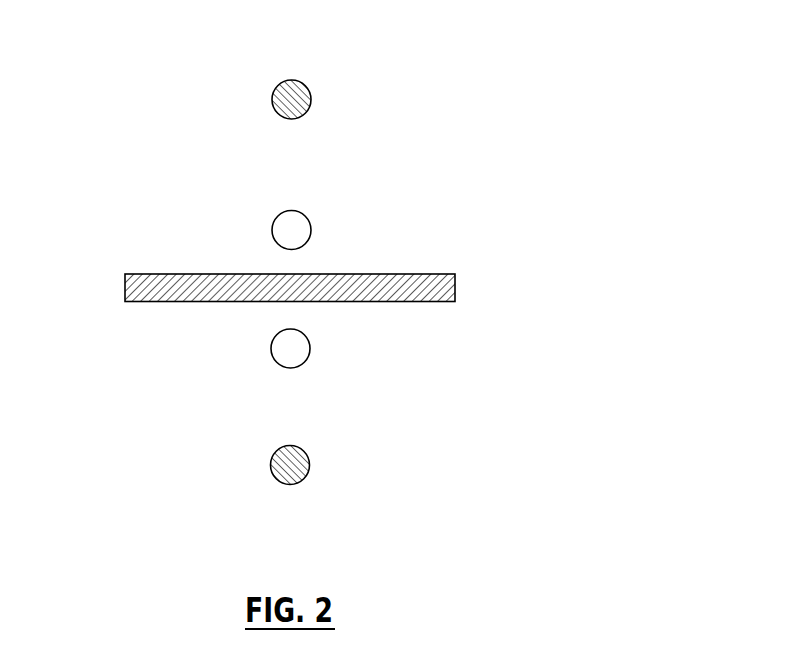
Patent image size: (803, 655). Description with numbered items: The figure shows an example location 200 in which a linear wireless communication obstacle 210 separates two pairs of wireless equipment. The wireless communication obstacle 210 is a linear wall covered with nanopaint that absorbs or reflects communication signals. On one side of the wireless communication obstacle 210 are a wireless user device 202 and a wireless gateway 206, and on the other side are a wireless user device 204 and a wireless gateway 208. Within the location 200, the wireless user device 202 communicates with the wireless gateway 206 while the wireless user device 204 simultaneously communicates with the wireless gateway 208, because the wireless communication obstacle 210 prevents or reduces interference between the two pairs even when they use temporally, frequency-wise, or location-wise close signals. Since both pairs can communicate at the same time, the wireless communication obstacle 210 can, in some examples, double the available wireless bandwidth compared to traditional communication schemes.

The location 200 is at (140, 68).
The wireless user device 202 is at (311, 93).
The wireless user device 204 is at (310, 470).
The wireless gateway 206 is at (311, 225).
The wireless gateway 208 is at (311, 352).
The wireless communication obstacle 210 is at (455, 290).